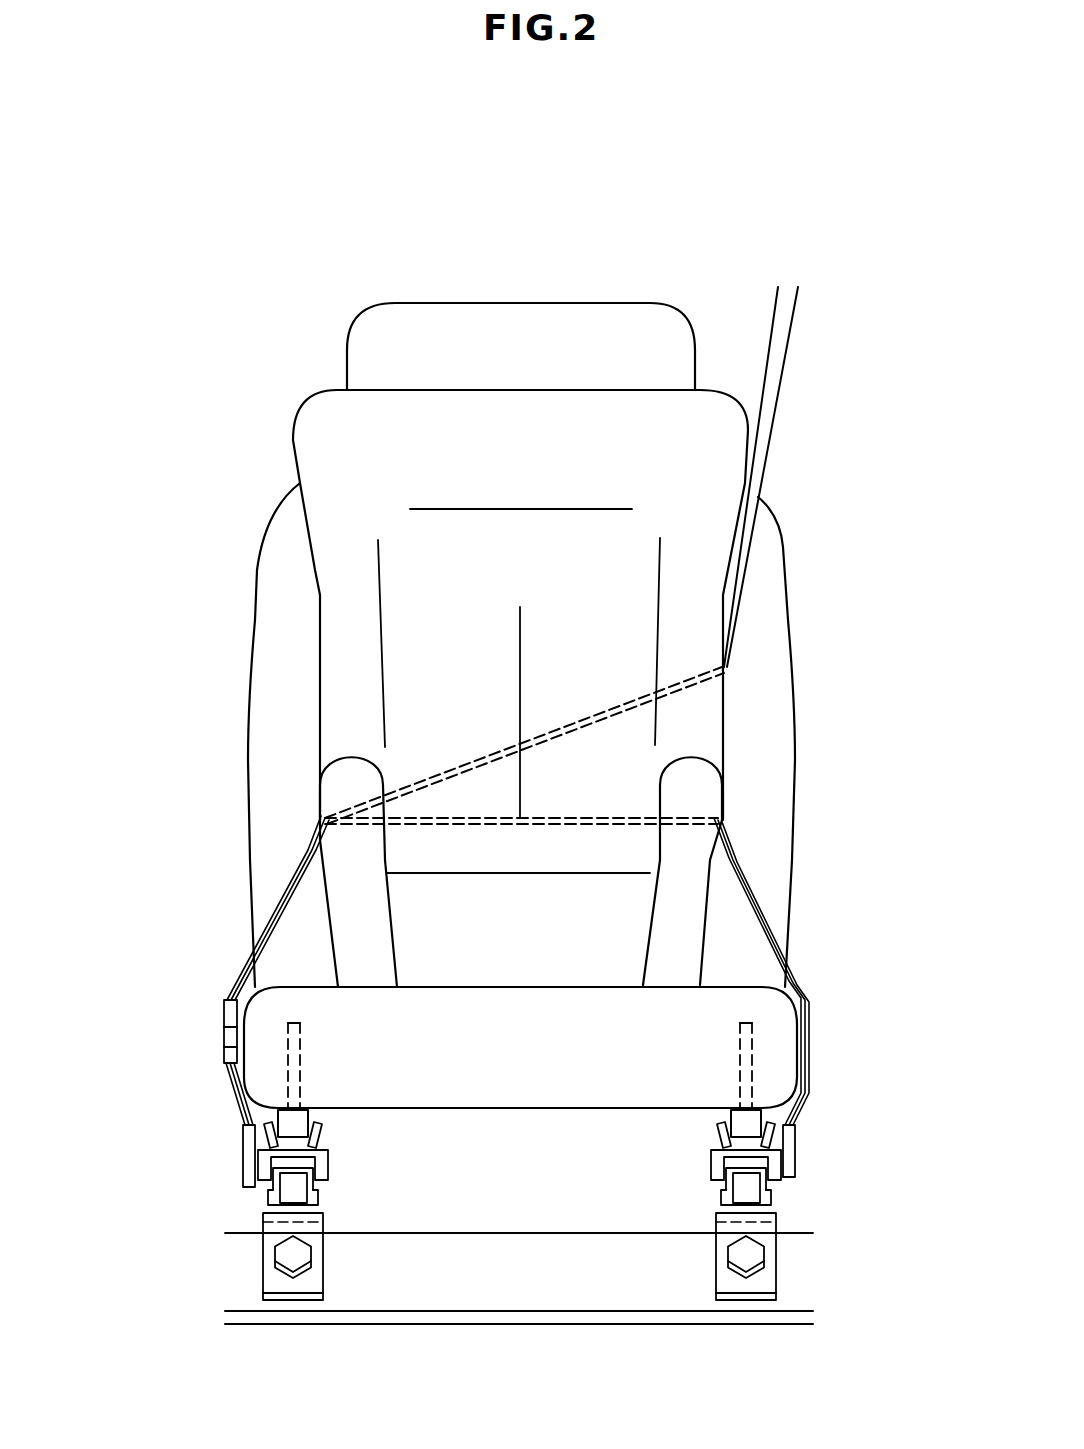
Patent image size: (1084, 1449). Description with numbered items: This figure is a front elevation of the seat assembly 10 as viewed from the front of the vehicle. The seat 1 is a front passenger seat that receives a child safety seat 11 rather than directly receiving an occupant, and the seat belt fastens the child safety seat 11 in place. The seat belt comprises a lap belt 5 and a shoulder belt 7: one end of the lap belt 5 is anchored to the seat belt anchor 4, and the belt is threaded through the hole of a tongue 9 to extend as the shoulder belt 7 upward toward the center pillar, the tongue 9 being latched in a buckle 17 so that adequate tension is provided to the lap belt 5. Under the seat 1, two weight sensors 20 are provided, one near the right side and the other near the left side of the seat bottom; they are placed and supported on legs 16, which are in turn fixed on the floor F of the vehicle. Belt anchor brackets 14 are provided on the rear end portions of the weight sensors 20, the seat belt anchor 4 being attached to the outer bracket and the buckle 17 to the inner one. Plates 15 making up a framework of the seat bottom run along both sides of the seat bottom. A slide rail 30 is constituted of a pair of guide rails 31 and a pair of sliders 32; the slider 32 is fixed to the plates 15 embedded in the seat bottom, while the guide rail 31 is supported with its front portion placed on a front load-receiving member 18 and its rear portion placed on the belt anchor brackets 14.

The seat assembly 10 is at (539, 265).
The seat 1 is at (795, 585).
The shoulder belt 7 is at (772, 381).
The child safety seat 11 is at (732, 709).
The lap belt 5 is at (747, 870).
The tongue 9 is at (223, 1018).
The buckle 17 is at (223, 1047).
The plates 15 is at (287, 1068).
The slide rail 30 is at (127, 1113).
The slider 32 is at (297, 1123).
The guide rail 31 is at (273, 1140).
The belt anchor bracket 14 is at (252, 1162).
The front load-receiving member 18 is at (277, 1178).
The seat belt anchor 4 is at (780, 1200).
The weight sensor 20 is at (255, 1200).
The legs 16 is at (263, 1250).
The floor F is at (787, 1312).